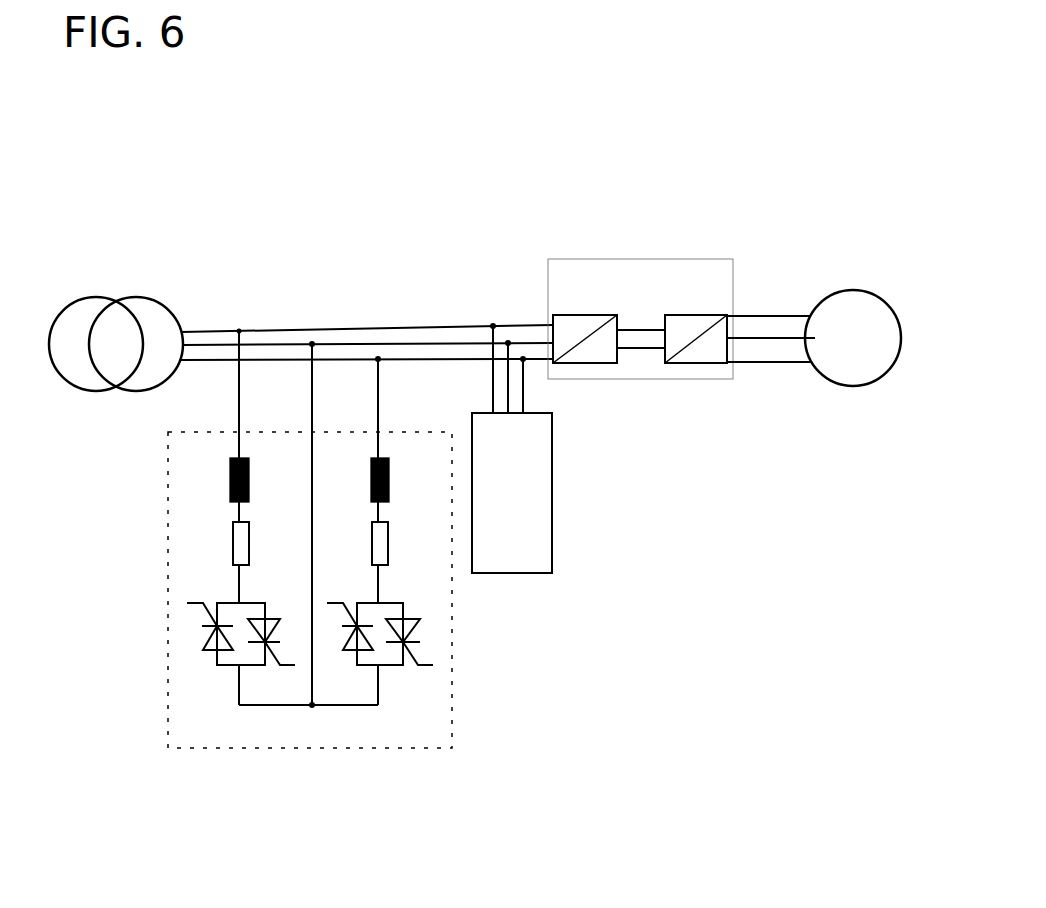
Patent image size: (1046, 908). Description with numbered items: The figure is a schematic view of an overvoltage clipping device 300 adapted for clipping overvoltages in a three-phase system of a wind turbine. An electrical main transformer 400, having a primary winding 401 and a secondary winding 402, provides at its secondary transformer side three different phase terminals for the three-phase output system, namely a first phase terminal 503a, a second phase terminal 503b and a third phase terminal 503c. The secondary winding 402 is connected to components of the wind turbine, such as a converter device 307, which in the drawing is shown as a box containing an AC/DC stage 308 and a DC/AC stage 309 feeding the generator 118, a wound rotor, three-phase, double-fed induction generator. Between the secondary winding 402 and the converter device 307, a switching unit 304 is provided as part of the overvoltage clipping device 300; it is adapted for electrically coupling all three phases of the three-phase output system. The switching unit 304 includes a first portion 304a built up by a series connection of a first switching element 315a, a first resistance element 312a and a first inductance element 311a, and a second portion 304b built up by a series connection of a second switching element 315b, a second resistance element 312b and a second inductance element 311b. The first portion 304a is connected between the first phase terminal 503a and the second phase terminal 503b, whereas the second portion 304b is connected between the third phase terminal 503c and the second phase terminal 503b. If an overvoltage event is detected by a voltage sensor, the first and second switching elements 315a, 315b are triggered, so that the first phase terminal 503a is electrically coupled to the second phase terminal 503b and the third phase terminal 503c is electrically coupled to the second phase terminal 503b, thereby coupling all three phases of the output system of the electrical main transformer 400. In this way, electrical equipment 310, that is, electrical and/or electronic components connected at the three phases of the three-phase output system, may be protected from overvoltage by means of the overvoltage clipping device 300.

The overvoltage clipping device 300 is at (780, 84).
The electrical main transformer 400 is at (113, 298).
The primary winding 401 is at (70, 373).
The secondary winding 402 is at (137, 388).
The first phase terminal 503a is at (236, 330).
The second phase terminal 503b is at (311, 344).
The third phase terminal 503c is at (378, 357).
The switching unit 304 is at (265, 752).
The first portion 304a is at (282, 727).
The second portion 304b is at (402, 727).
The first inductance element 311a is at (230, 488).
The second inductance element 311b is at (383, 485).
The first resistance element 312a is at (232, 550).
The second resistance element 312b is at (390, 557).
The first switching element 315a is at (202, 623).
The second switching element 315b is at (423, 632).
The converter device 307 is at (582, 260).
The AC/DC converter 308 is at (572, 363).
The DC/AC converter 309 is at (708, 363).
The electrical equipment 310 is at (512, 518).
The generator 118 is at (850, 297).